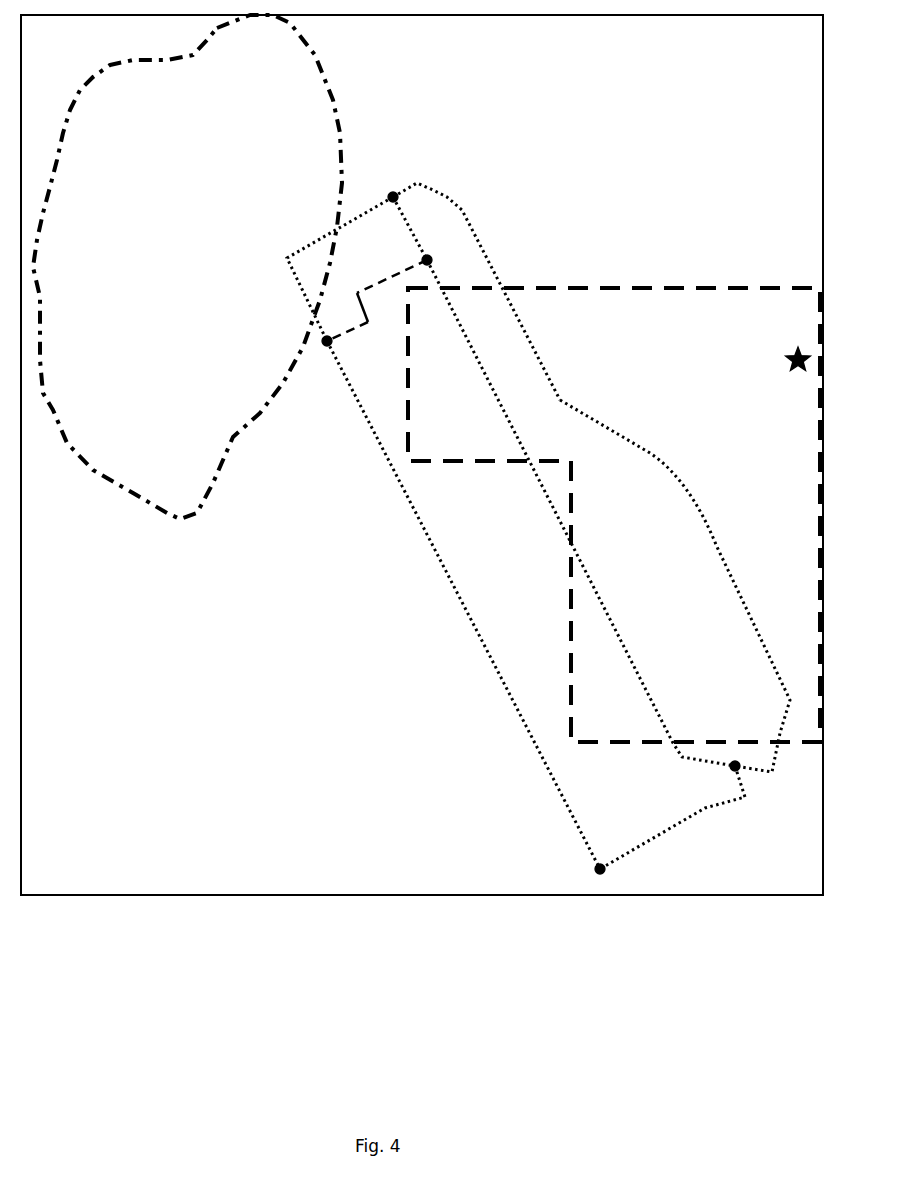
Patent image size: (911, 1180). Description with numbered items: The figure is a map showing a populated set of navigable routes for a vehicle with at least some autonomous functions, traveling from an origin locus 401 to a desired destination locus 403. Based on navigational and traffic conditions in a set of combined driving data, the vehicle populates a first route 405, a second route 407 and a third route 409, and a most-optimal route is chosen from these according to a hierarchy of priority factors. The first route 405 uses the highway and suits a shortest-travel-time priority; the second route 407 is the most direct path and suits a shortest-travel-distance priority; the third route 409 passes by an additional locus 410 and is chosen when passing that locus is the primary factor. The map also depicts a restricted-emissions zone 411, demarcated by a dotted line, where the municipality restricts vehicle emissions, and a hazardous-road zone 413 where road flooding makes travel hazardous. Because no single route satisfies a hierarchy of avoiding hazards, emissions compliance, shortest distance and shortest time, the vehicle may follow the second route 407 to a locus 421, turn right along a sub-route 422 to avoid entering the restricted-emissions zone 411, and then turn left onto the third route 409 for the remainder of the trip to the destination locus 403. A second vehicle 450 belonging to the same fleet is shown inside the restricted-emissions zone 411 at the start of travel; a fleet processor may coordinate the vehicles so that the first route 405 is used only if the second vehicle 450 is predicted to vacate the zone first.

The origin locus 401 is at (395, 192).
The destination locus 403 is at (738, 770).
The first route 405 is at (652, 453).
The second route 407 is at (612, 622).
The third route 409 is at (403, 493).
The additional locus 410 is at (601, 863).
The restricted-emissions zone 411 is at (672, 288).
The hazardous-road zone 413 is at (207, 45).
The locus 421 is at (422, 259).
The sub-route 422 is at (366, 318).
The second vehicle 450 is at (790, 357).